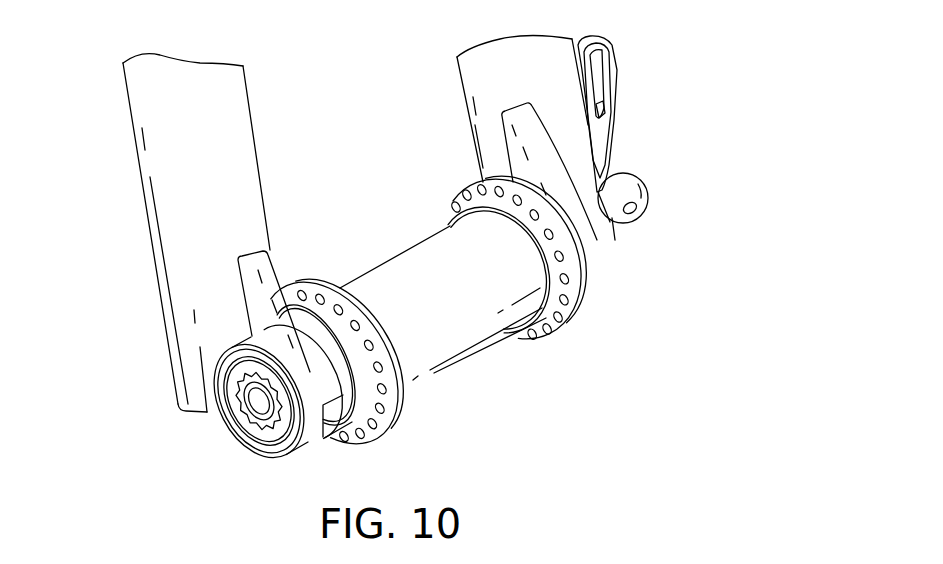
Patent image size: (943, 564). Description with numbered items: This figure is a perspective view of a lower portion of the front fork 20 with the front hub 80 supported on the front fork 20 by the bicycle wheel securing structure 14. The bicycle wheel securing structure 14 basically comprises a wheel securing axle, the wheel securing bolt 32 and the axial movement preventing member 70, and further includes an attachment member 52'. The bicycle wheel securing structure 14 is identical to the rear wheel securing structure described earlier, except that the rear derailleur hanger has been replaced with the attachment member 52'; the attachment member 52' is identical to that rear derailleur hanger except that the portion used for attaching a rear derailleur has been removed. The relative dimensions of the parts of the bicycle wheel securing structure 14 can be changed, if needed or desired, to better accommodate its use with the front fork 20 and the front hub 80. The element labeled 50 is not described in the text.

The front fork 20 is at (132, 143).
The bicycle wheel securing structure 14 is at (359, 351).
The front hub 80 is at (389, 249).
The end cap 50 is at (247, 458).
The axial movement preventing member 70 is at (233, 397).
The wheel securing bolt 32 is at (216, 382).
The attachment member 52' is at (308, 408).